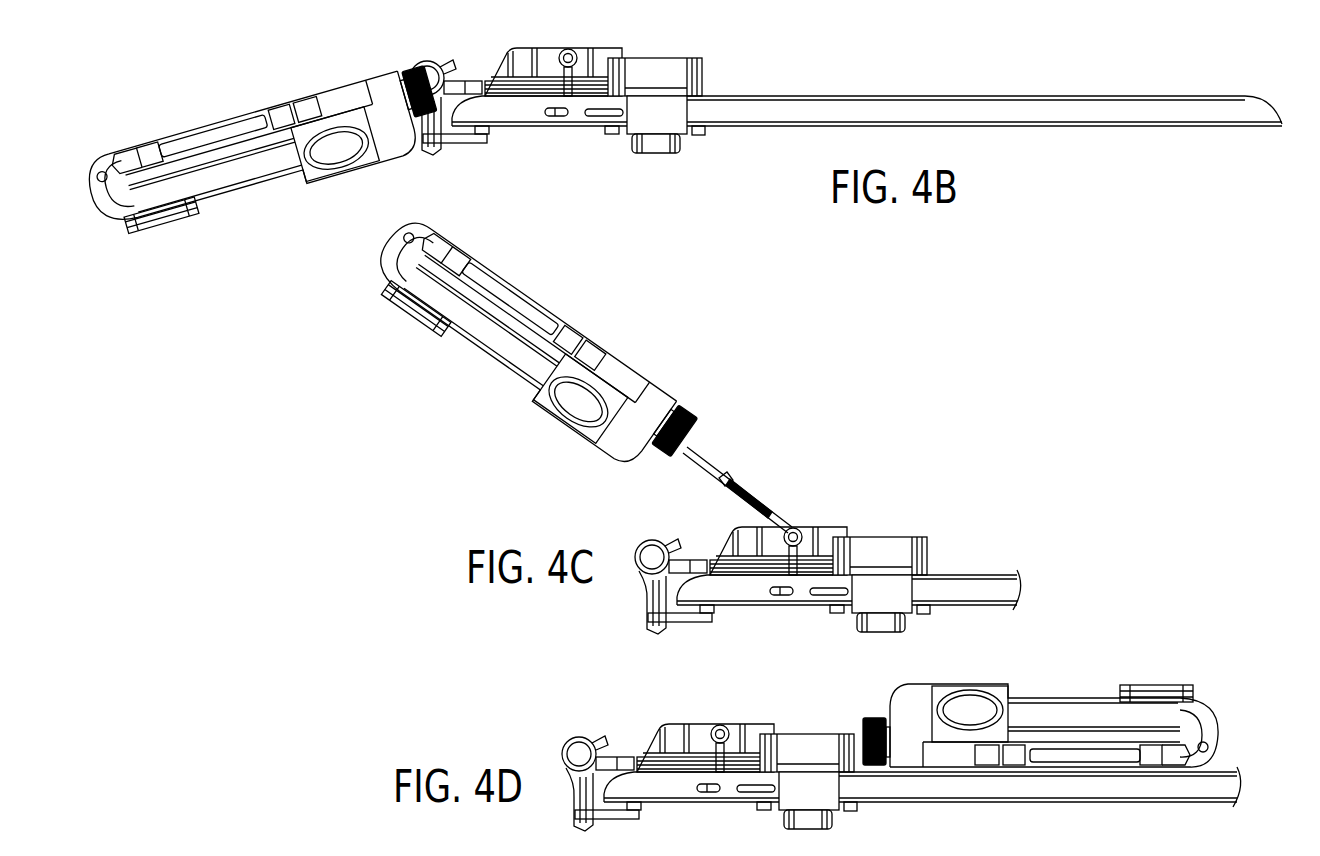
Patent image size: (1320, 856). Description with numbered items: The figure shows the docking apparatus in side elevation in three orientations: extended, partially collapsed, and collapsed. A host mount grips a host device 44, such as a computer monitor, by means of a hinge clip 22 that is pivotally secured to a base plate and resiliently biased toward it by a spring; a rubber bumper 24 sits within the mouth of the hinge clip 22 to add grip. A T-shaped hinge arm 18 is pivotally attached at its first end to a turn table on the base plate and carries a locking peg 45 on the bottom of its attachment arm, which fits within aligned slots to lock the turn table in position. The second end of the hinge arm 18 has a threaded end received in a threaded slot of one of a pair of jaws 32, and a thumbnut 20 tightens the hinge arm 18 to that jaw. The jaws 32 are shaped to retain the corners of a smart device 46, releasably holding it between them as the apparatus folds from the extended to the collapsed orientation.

In FIG. 4B, the hinge arm 18 is at (571, 48).
In FIG. 4C, the hinge arm 18 is at (797, 528).
In FIG. 4D, the hinge arm 18 is at (722, 725).
In FIG. 4B, the thumbnut 20 is at (404, 72).
In FIG. 4C, the thumbnut 20 is at (688, 418).
In FIG. 4D, the thumbnut 20 is at (871, 717).
In FIG. 4B, the hinge clip 22 is at (422, 62).
In FIG. 4C, the hinge clip 22 is at (641, 541).
In FIG. 4D, the hinge clip 22 is at (567, 740).
In FIG. 4B, the rubber bumper 24 is at (612, 135).
In FIG. 4C, the rubber bumper 24 is at (833, 615).
In FIG. 4D, the rubber bumper 24 is at (760, 812).
In FIG. 4B, the jaws 32 is at (327, 178).
In FIG. 4C, the jaws 32 is at (410, 300).
In FIG. 4D, the jaws 32 is at (993, 688).
In FIG. 4B, the host device 44 is at (826, 97).
In FIG. 4C, the host device 44 is at (960, 580).
In FIG. 4D, the host device 44 is at (1215, 785).
In FIG. 4C, the locking peg 45 is at (728, 490).
In FIG. 4B, the smart device 46 is at (147, 197).
In FIG. 4C, the smart device 46 is at (500, 330).
In FIG. 4D, the smart device 46 is at (1085, 717).